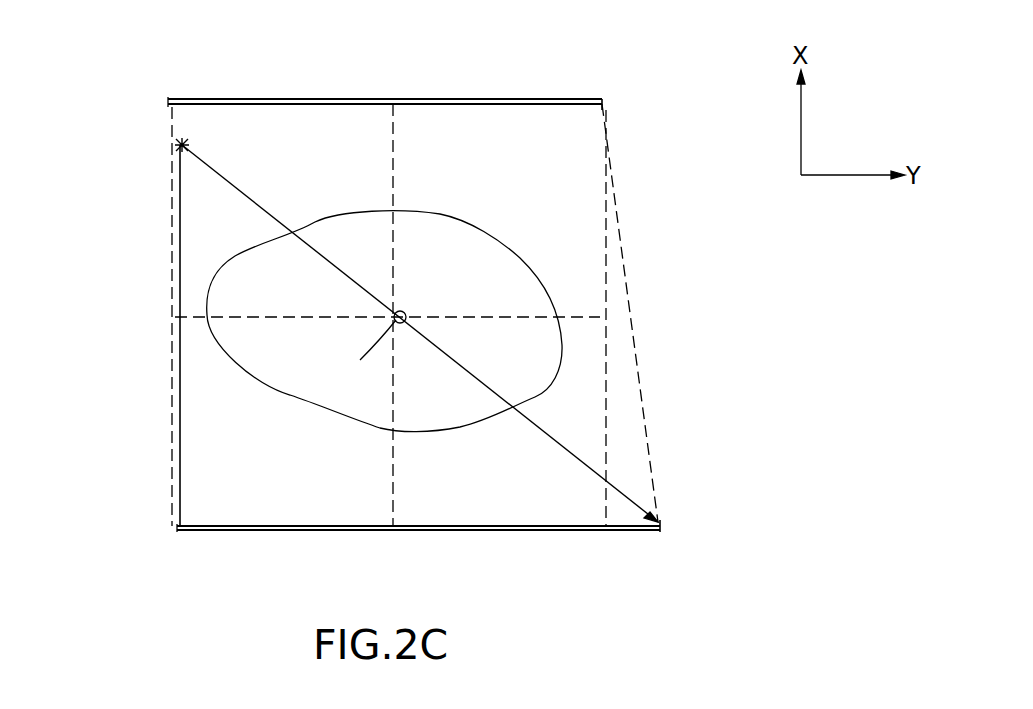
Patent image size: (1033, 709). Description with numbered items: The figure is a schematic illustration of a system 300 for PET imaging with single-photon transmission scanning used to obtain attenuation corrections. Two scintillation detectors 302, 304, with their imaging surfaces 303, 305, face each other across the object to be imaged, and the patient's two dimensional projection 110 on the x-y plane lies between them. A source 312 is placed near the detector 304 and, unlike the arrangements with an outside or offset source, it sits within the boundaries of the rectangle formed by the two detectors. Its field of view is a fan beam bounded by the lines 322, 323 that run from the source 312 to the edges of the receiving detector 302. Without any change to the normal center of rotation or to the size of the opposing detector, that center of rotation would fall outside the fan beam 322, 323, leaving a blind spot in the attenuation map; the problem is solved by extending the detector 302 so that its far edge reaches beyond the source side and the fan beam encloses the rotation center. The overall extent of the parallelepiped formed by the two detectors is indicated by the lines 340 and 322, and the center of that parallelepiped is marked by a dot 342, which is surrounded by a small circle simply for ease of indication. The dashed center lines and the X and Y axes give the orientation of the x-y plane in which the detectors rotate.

The system 300 is at (440, 313).
The scintillation detector 302 is at (635, 532).
The imaging surface 303 is at (632, 522).
The scintillation detector 304 is at (557, 99).
The imaging surface 305 is at (578, 108).
The source 312 is at (178, 147).
The fan beam line 322 is at (176, 258).
The fan beam line 323 is at (249, 198).
The extent line 340 is at (632, 318).
The dot 342 is at (407, 312).
The two dimensional projection 110 is at (470, 232).